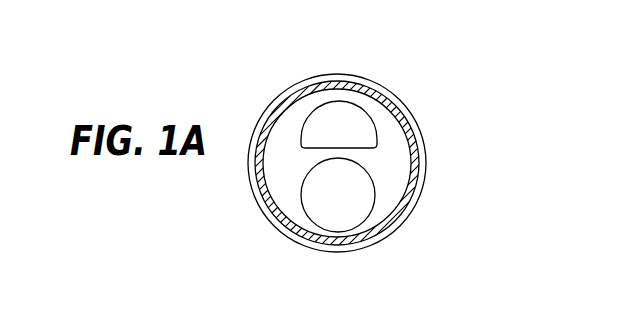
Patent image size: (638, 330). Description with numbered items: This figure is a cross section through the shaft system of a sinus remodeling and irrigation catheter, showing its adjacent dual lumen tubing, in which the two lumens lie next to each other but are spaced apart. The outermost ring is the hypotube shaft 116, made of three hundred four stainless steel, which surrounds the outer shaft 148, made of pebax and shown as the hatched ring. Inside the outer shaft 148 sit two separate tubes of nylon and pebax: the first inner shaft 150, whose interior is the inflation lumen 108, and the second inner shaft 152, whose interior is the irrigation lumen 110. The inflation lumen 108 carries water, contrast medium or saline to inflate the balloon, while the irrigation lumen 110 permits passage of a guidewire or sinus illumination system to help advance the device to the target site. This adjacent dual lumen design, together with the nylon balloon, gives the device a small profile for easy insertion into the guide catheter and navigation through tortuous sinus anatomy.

The inflation lumen 108 is at (348, 115).
The first inner shaft 150 is at (378, 131).
The irrigation lumen 110 is at (363, 198).
The second inner shaft 152 is at (378, 208).
The hypotube shaft 116 is at (379, 247).
The outer shaft 148 is at (288, 228).